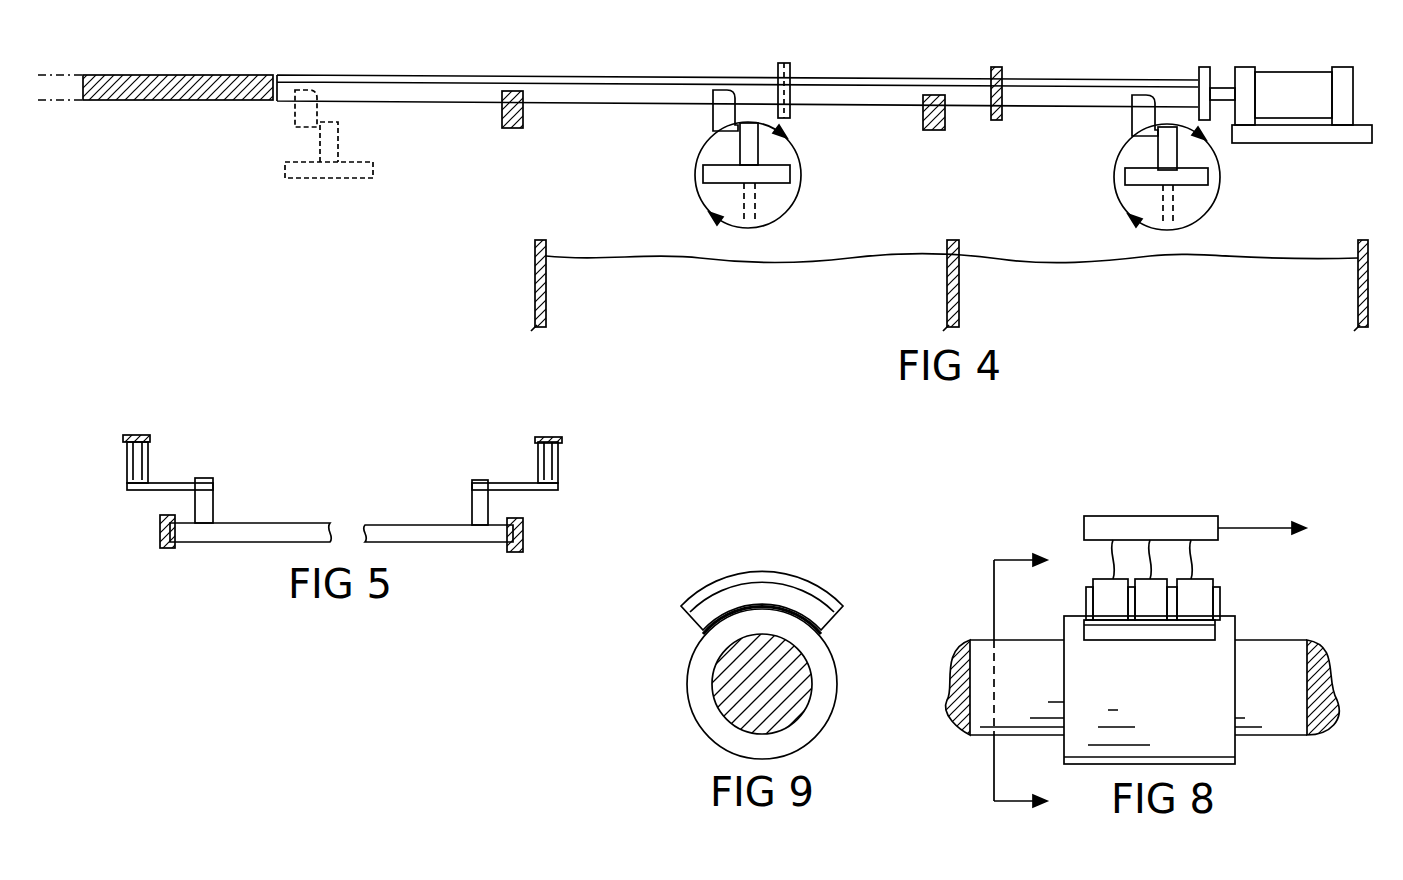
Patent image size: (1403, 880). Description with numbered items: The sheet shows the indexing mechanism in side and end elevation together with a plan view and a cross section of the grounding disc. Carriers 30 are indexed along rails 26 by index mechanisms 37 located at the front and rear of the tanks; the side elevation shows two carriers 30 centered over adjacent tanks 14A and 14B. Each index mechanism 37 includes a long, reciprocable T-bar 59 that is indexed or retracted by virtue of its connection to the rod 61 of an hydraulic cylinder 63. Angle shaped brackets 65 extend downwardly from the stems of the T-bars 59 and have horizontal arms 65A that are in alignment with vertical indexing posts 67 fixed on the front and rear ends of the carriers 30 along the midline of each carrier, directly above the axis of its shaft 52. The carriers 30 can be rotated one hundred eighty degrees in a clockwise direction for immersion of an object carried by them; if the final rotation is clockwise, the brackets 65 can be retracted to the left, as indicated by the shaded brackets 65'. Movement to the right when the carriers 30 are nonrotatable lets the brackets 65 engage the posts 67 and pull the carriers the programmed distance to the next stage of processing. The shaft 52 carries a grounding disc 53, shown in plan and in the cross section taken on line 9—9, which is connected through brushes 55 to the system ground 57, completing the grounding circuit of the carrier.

In FIG. 4, the index mechanism 37 is at (684, 64).
In FIG. 5, the index mechanism 37 is at (128, 427).
In FIG. 4, the T-bar 59 is at (850, 80).
In FIG. 5, the T-bar 59 is at (142, 437).
In FIG. 4, the rod 61 is at (1220, 92).
In FIG. 4, the hydraulic cylinder 63 is at (1287, 82).
In FIG. 4, the angle shaped bracket 65 is at (726, 123).
In FIG. 5, the angle shaped bracket 65 is at (376, 450).
In FIG. 4, the retracted bracket 65' is at (756, 126).
In FIG. 5, the horizontal arm 65A is at (177, 481).
In FIG. 4, the indexing post 67 is at (750, 150).
In FIG. 5, the indexing post 67 is at (216, 507).
In FIG. 4, the carrier 30 is at (773, 190).
In FIG. 5, the carrier 30 is at (226, 545).
In FIG. 5, the rail 26 is at (162, 533).
In FIG. 4, the tank 14A is at (546, 303).
In FIG. 4, the tank 14B is at (959, 307).
In FIG. 9, the system ground 57 is at (803, 588).
In FIG. 8, the system ground 57 is at (1148, 526).
In FIG. 9, the brushes 55 is at (837, 621).
In FIG. 8, the brushes 55 is at (1201, 601).
In FIG. 9, the shaft 52 is at (787, 663).
In FIG. 8, the shaft 52 is at (1296, 648).
In FIG. 9, the grounding disc 53 is at (812, 718).
In FIG. 8, the grounding disc 53 is at (1221, 750).
In FIG. 8, the section line 9— 9 is at (1030, 680).